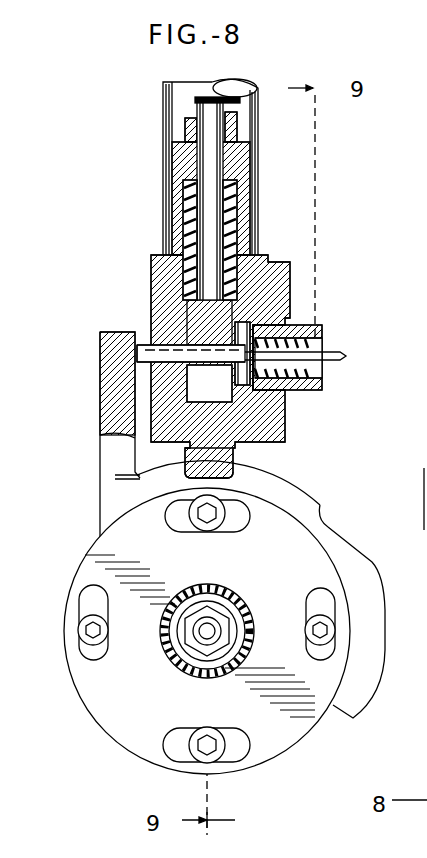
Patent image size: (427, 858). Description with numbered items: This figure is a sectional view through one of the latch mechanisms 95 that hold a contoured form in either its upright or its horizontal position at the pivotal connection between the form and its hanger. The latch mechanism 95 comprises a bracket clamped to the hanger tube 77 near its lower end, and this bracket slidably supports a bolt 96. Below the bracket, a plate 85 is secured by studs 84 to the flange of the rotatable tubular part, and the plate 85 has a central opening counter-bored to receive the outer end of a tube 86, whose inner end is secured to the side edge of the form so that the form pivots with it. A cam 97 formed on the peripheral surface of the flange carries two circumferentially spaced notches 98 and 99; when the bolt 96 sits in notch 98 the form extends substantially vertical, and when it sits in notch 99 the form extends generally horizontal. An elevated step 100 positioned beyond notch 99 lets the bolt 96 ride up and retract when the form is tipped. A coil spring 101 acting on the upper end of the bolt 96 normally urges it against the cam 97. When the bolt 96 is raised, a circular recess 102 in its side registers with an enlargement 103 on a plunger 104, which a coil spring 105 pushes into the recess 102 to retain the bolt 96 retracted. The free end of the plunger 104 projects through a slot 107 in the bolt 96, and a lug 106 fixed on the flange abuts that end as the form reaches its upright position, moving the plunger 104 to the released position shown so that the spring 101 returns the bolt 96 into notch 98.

The tube 77 is at (184, 102).
The studs 84 is at (106, 634).
The plate 85 is at (106, 708).
The tube 86 is at (232, 603).
The latch mechanism 95 is at (326, 338).
The bolt 96 is at (162, 310).
The cam 97 is at (300, 500).
The notch 98 is at (240, 468).
The notch 99 is at (326, 522).
The elevated step 100 is at (378, 628).
The coil spring 101 is at (240, 250).
The circular recess 102 is at (209, 383).
The enlargement 103 is at (270, 318).
The plunger 104 is at (346, 356).
The coil spring 105 is at (288, 380).
The lug 106 is at (118, 366).
The slot 107 is at (152, 372).